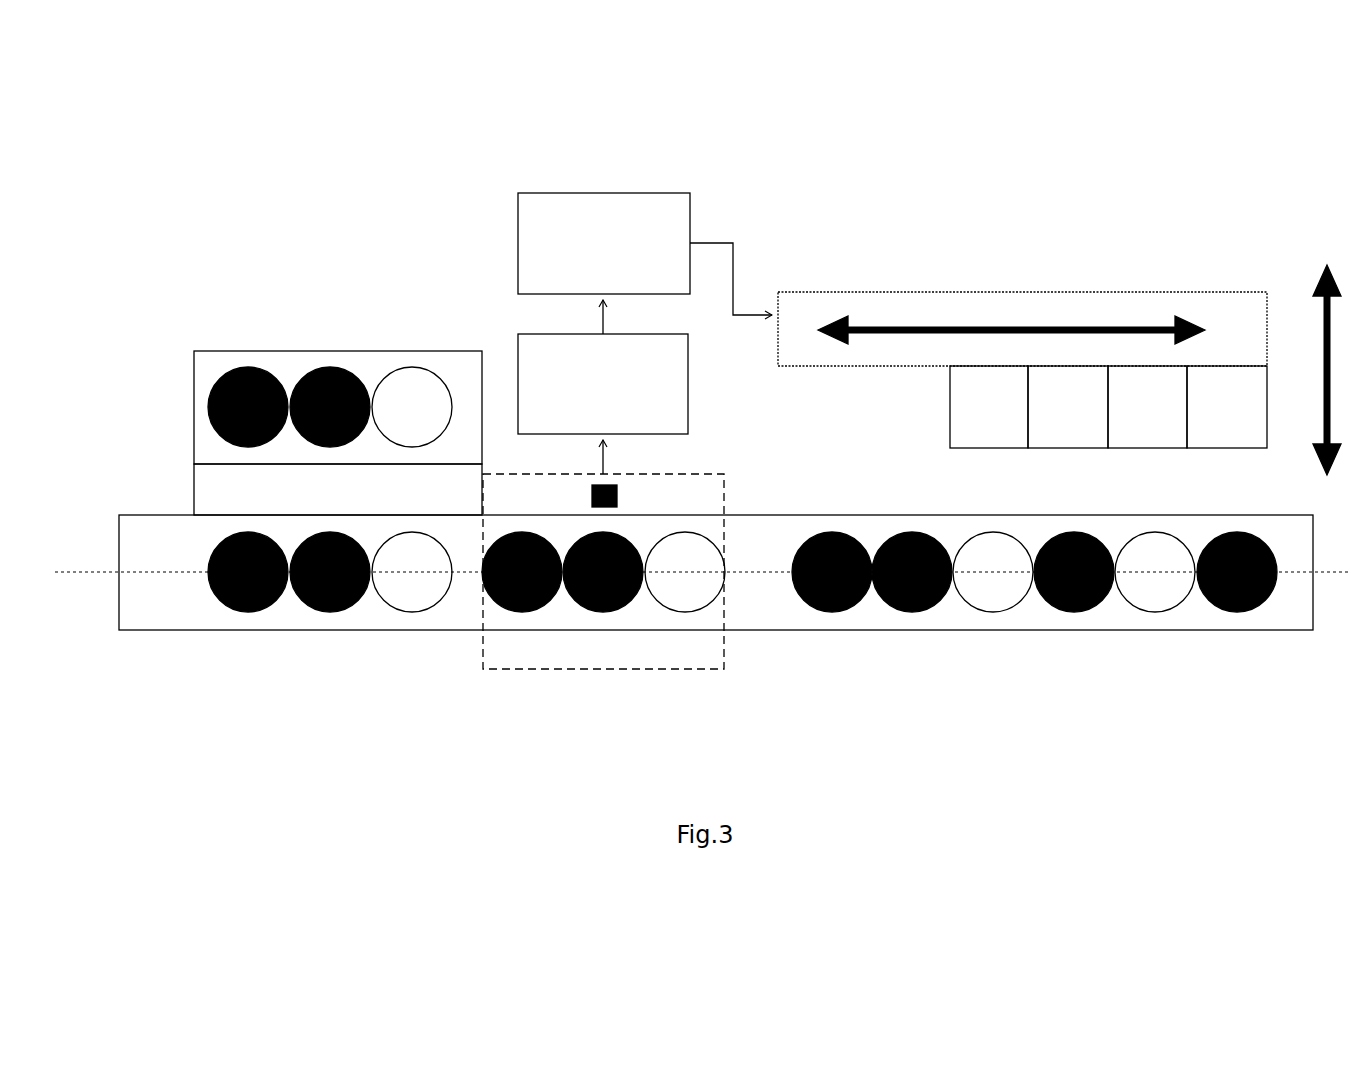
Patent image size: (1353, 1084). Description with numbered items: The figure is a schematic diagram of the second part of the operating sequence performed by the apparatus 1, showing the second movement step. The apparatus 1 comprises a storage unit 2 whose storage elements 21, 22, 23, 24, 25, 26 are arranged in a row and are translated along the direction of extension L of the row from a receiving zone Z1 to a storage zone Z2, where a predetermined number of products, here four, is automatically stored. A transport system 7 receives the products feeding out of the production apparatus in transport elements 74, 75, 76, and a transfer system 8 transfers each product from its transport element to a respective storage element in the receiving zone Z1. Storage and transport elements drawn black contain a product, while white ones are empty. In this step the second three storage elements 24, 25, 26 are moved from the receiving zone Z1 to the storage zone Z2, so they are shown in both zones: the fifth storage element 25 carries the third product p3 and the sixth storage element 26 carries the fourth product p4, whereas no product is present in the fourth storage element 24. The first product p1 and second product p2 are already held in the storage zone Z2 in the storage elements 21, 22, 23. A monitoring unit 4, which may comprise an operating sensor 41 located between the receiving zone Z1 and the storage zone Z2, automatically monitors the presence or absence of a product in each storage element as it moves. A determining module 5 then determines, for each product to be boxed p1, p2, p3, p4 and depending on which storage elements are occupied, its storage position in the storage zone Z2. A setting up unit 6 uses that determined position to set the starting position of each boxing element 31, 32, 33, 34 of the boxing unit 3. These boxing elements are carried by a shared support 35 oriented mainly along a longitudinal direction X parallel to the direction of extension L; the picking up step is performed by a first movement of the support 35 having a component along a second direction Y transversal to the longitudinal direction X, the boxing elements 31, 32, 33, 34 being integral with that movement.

The apparatus 1 is at (878, 240).
The storage unit 2 is at (275, 634).
The boxing unit 3 is at (1031, 322).
The monitoring unit 4 is at (727, 652).
The determining module 5 is at (603, 384).
The setting up unit 6 is at (604, 243).
The transport system 7 is at (192, 348).
The transfer system 8 is at (338, 489).
The storage element 21 is at (1238, 613).
The storage element 22 is at (1158, 613).
The storage element 23 is at (1073, 613).
The fourth storage element 24 is at (428, 612).
The fifth storage element 25 is at (348, 610).
The sixth storage element 26 is at (215, 602).
The boxing element 31 is at (1227, 407).
The boxing element 32 is at (1147, 407).
The boxing element 33 is at (1068, 407).
The boxing element 34 is at (989, 407).
The shared support 35 is at (1145, 292).
The operating sensor 41 is at (617, 496).
The transport element 74 is at (412, 368).
The transport element 75 is at (330, 368).
The transport element 76 is at (247, 368).
The first product p1 is at (1223, 613).
The second product p2 is at (1040, 607).
The third product p3 is at (350, 375).
The fourth product p4 is at (210, 395).
The receiving zone Z1 is at (188, 530).
The storage zone Z2 is at (967, 620).
The longitudinal direction X is at (988, 322).
The second direction Y is at (1320, 318).
The direction of extension L is at (1327, 577).